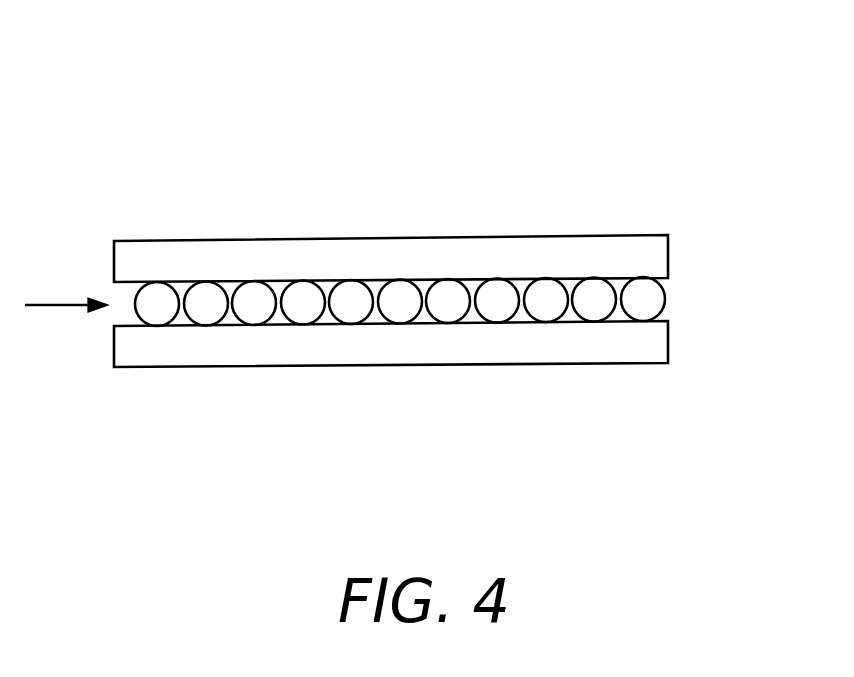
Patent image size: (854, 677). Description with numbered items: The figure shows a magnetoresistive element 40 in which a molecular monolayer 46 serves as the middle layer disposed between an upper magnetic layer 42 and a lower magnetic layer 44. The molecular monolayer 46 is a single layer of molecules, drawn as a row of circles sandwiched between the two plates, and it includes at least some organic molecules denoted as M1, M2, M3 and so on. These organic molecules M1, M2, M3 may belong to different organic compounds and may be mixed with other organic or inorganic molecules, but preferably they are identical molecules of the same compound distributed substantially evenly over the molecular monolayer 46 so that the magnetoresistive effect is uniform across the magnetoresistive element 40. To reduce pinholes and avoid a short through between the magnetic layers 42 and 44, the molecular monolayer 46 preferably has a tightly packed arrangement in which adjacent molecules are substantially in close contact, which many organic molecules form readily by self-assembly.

The magnetoresistive element 40 is at (346, 252).
The magnetic layer 42 is at (435, 262).
The magnetic layer 44 is at (475, 347).
The molecular monolayer 46 is at (66, 287).
The organic molecule M1 is at (158, 310).
The organic molecule M2 is at (202, 310).
The organic molecule M3 is at (252, 312).